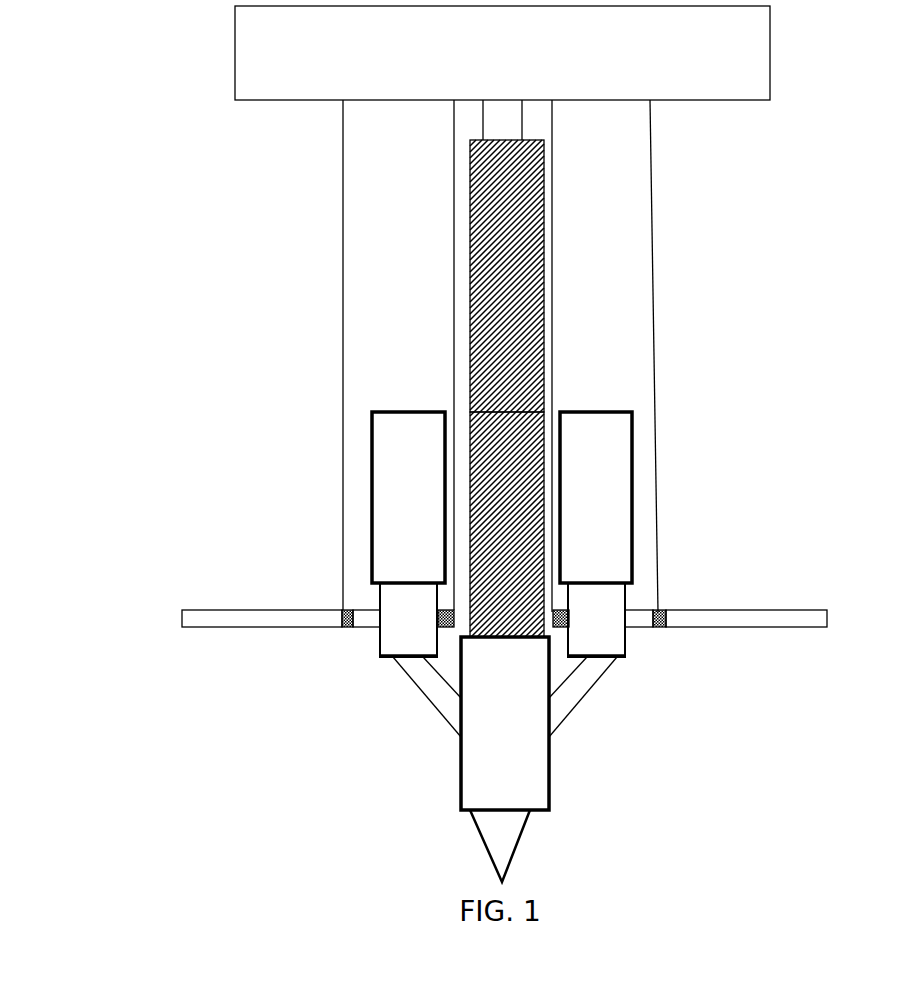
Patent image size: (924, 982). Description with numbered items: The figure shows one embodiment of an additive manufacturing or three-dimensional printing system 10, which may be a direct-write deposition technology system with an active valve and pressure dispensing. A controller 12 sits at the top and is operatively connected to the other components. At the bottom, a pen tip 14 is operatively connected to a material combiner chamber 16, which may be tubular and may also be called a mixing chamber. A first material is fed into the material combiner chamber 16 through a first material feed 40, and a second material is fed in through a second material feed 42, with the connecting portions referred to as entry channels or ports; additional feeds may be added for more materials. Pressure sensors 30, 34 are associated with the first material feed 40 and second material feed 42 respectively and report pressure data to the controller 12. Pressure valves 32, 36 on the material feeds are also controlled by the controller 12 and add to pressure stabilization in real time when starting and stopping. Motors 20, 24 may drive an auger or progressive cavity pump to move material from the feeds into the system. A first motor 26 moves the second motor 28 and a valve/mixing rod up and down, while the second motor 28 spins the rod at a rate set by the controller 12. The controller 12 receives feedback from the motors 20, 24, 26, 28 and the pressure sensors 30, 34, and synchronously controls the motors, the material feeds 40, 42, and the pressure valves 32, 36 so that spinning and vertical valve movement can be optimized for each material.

The 3D printing system 10 is at (95, 133).
The controller 12 is at (502, 53).
The pen tip 14 is at (515, 855).
The material combiner chamber 16 is at (528, 788).
The motor 20 is at (416, 574).
The motor 24 is at (590, 574).
The first motor 26 is at (530, 200).
The second motor 28 is at (515, 437).
The pressure sensor 30 is at (353, 628).
The pressure valve 32 is at (450, 628).
The pressure sensor 34 is at (660, 628).
The pressure valve 36 is at (570, 628).
The first material feed 40 is at (205, 610).
The second material feed 42 is at (813, 612).